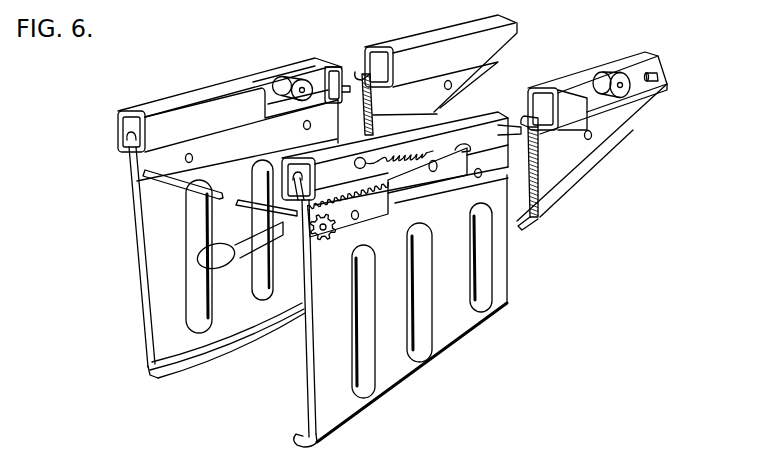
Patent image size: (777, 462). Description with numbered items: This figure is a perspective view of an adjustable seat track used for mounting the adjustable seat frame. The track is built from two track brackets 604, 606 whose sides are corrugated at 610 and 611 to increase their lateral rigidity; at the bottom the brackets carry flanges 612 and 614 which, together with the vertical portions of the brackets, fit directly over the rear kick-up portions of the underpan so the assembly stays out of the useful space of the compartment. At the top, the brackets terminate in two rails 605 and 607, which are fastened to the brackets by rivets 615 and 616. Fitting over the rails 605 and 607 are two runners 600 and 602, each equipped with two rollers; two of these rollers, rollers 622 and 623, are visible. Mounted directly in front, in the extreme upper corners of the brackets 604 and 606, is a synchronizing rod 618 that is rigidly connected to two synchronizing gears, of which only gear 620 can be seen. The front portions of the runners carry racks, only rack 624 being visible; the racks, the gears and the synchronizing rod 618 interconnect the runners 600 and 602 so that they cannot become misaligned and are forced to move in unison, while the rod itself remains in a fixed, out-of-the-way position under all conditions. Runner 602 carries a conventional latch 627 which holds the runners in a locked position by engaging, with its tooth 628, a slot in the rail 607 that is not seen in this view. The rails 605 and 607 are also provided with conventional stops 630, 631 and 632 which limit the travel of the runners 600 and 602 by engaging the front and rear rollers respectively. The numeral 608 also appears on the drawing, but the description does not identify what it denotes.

The runner 600 is at (156, 105).
The stop 631 is at (125, 131).
The roller 622 is at (285, 82).
The rivet 615 is at (195, 155).
The track bracket 604 is at (150, 280).
The flange 612 is at (152, 372).
The synchronizing rod 618 is at (232, 190).
The corrugation 611 is at (203, 226).
The runner 602 is at (298, 160).
The stop 630 is at (309, 168).
The latch 627 is at (428, 186).
The tooth 628 is at (463, 148).
The rack 624 is at (368, 212).
The synchronizing gear 620 is at (318, 244).
The track bracket 606 is at (316, 364).
The flange 614 is at (303, 431).
The corrugation 610 is at (372, 394).
The rail 605 is at (363, 72).
The rail 607 is at (526, 116).
The third rail 608 is at (665, 86).
The roller 623 is at (642, 64).
The stop 632 is at (660, 77).
The rivet 616 is at (593, 135).